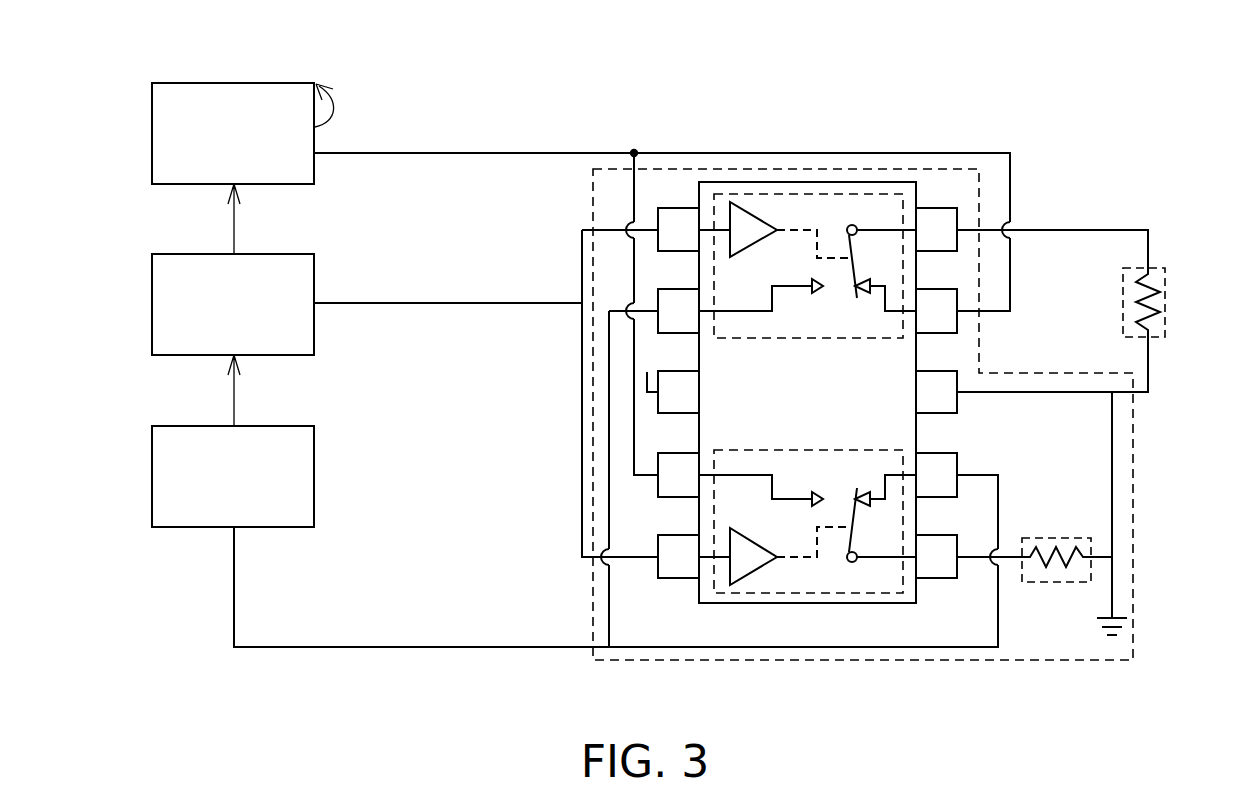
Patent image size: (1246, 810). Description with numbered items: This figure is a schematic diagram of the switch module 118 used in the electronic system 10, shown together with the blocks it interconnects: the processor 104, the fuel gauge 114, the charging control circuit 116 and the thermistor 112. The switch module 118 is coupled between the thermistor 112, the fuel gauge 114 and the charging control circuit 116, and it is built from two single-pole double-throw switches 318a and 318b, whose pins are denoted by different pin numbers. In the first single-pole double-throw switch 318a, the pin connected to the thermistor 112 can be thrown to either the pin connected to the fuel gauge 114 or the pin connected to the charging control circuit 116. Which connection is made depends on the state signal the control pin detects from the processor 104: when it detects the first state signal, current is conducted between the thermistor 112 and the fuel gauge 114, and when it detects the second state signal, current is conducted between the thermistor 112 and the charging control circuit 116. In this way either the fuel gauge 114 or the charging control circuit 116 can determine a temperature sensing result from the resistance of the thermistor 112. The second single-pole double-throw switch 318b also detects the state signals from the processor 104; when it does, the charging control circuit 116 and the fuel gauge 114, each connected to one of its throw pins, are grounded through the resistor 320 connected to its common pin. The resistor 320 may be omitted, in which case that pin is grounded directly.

The electronic system 10 is at (1019, 90).
The processor 104 is at (152, 303).
The thermistor 112 is at (1166, 304).
The fuel gauge 114 is at (152, 476).
The charging control circuit 116 is at (152, 132).
The switch module 118 is at (593, 611).
The single-pole double-throw switch 318a is at (838, 340).
The single-pole double-throw switch 318b is at (747, 450).
The resistor 320 is at (1056, 538).